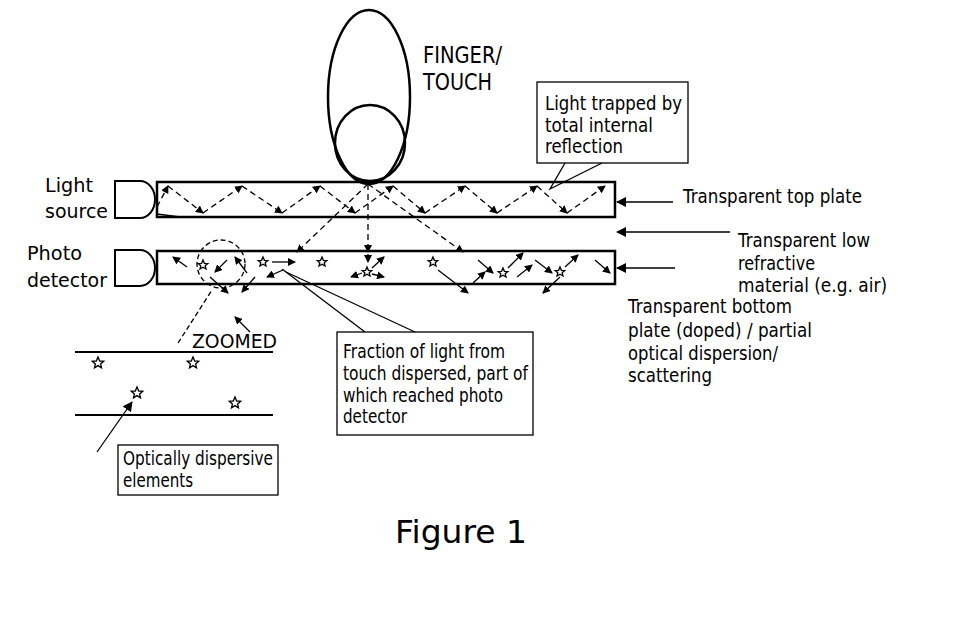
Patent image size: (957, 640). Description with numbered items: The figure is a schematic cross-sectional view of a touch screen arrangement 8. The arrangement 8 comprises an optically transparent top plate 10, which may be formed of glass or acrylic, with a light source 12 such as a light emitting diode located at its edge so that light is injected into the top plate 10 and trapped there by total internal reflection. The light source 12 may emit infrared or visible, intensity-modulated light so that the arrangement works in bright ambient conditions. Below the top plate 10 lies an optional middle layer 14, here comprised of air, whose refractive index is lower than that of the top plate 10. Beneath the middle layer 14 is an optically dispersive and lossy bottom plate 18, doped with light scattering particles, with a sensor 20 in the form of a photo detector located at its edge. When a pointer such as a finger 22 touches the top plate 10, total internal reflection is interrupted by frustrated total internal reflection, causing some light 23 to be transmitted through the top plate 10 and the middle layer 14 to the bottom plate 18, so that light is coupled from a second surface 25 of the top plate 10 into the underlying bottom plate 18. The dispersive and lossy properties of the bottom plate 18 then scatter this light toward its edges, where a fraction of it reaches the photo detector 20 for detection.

The touch screen arrangement 8 is at (727, 120).
The optically transparent top plate 10 is at (615, 210).
The light source 12 is at (133, 192).
The middle layer 14 is at (725, 232).
The bottom plate 18 is at (588, 277).
The sensor 20 is at (133, 276).
The finger 22 is at (390, 148).
The light 23 is at (201, 182).
The second surface 25 is at (180, 217).